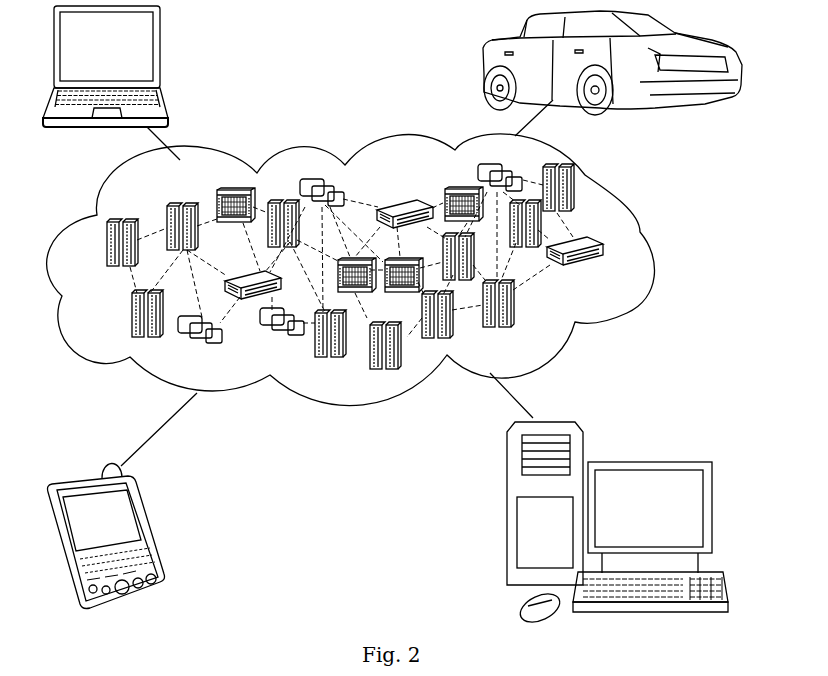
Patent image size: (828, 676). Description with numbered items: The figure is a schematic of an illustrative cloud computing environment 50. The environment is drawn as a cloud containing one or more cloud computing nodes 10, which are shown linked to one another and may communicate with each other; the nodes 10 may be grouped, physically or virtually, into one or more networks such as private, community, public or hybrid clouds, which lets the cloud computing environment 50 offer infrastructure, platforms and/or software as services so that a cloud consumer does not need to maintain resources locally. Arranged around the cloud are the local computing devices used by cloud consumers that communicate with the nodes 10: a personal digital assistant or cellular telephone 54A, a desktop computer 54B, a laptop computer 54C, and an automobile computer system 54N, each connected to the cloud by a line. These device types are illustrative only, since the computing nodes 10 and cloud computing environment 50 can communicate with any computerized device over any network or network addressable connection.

The cloud computing node 10 is at (604, 270).
The cloud computing environment 50 is at (651, 250).
The personal digital assistant or cellular telephone 54A is at (146, 529).
The desktop computer 54B is at (648, 461).
The laptop computer 54C is at (159, 51).
The automobile computer system 54N is at (482, 63).